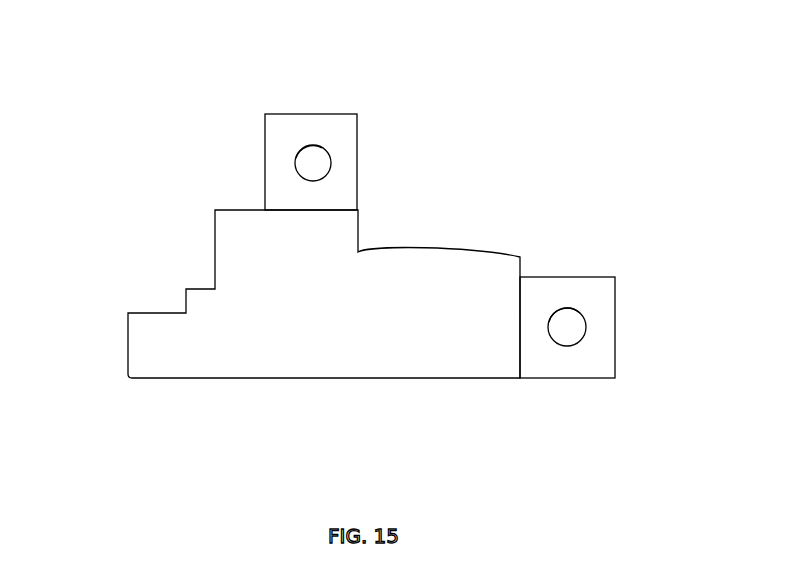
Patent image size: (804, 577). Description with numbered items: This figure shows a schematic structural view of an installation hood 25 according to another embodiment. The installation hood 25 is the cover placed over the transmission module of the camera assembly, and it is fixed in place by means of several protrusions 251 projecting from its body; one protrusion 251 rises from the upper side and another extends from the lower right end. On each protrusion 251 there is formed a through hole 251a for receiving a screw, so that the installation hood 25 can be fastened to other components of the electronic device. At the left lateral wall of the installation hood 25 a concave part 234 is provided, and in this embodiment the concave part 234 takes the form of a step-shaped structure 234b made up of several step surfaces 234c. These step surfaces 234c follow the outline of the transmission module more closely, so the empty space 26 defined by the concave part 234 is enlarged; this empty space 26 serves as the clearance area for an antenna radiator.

The installation hood 25 is at (365, 255).
The protrusion 251 is at (285, 123).
The through hole 251a is at (310, 158).
The concave part 234 is at (148, 313).
The step-shaped structure 234b is at (215, 251).
The step surface 234c is at (206, 289).
The empty space 26 is at (149, 267).